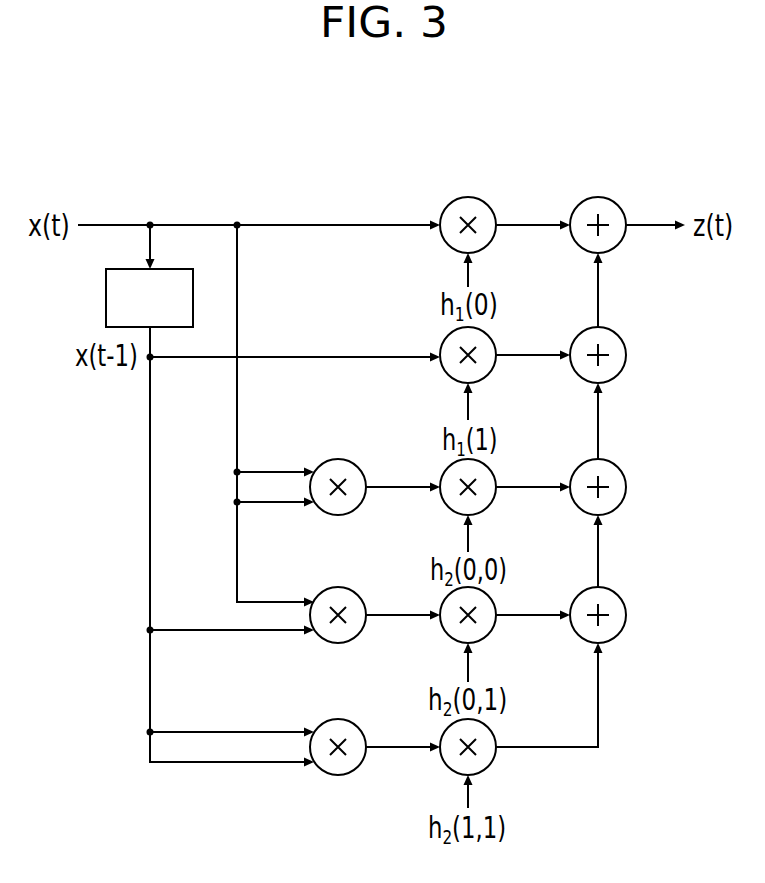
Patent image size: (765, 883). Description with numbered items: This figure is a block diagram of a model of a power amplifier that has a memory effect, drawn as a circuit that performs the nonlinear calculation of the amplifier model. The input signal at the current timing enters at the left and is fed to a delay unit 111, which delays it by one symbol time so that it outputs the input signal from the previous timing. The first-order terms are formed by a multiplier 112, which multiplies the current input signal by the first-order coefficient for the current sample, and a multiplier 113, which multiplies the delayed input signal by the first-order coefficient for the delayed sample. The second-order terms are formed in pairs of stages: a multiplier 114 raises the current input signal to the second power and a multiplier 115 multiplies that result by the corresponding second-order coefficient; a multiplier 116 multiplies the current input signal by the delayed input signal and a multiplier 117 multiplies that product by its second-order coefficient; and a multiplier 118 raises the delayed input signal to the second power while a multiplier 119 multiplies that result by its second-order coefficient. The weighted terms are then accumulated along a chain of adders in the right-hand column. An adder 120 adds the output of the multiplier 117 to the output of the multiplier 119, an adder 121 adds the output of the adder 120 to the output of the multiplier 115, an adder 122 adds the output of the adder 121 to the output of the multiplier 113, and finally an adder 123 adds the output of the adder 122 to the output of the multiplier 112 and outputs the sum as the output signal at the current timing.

The delay unit 111 is at (193, 293).
The multiplier 112 is at (493, 211).
The multiplier 113 is at (493, 341).
The multiplier 114 is at (363, 473).
The multiplier 115 is at (493, 473).
The multiplier 116 is at (363, 601).
The multiplier 117 is at (493, 602).
The multiplier 118 is at (363, 732).
The multiplier 119 is at (493, 732).
The adder 120 is at (623, 602).
The adder 121 is at (623, 473).
The adder 122 is at (623, 341).
The adder 123 is at (623, 211).